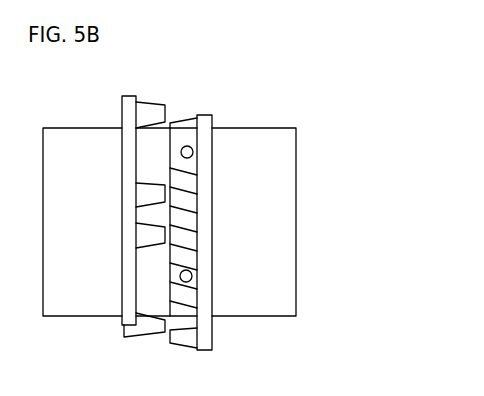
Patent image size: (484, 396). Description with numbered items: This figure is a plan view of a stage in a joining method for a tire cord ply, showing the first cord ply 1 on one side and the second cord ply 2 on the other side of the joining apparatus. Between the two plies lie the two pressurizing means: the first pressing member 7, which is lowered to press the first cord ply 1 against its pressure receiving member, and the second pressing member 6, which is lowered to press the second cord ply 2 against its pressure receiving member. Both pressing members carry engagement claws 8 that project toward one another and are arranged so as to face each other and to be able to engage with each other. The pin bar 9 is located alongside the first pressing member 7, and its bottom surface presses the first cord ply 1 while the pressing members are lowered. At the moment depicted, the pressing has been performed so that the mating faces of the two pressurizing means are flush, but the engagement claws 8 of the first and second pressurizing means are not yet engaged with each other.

The first cord ply 1 is at (265, 260).
The second cord ply 2 is at (65, 257).
The second pressing member 6 is at (128, 177).
The first pressing member 7 is at (205, 192).
The engagement claw 8 is at (155, 113).
The pin bar 9 is at (193, 152).